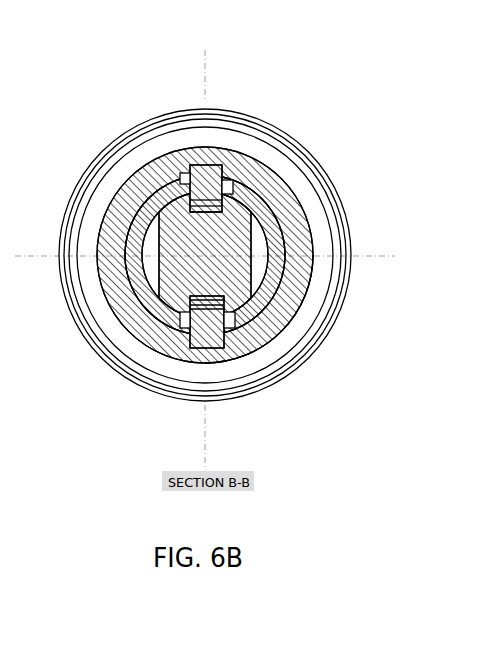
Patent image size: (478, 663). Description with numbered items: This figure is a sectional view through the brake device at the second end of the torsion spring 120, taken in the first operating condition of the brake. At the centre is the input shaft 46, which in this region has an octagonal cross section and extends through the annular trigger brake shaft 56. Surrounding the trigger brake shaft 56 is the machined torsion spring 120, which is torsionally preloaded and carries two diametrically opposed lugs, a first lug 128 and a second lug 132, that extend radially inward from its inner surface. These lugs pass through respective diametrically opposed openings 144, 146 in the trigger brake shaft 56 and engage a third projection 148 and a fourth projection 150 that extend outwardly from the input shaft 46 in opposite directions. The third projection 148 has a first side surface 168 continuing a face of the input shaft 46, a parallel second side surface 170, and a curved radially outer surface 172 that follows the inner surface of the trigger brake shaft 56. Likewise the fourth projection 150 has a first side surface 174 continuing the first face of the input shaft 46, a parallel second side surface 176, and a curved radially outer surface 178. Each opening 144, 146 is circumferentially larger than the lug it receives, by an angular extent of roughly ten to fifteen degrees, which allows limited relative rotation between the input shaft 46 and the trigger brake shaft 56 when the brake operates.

The torsion spring 120 is at (150, 160).
The first lug 128 is at (228, 172).
The radially outer surface of the third projection 172 is at (235, 195).
The third projection 148 is at (247, 203).
The first side surface of the third projection 168 is at (262, 222).
The first side surface of the fourth projection 174 is at (178, 274).
The input shaft 46 is at (190, 310).
The opening 144 is at (182, 172).
The second side surface of the third projection 170 is at (217, 200).
The radially outer surface of the fourth projection 178 is at (181, 318).
The fourth projection 150 is at (184, 312).
The second lug 132 is at (190, 326).
The second side surface of the fourth projection 176 is at (183, 318).
The opening 146 is at (231, 330).
The trigger brake shaft 56 is at (255, 320).